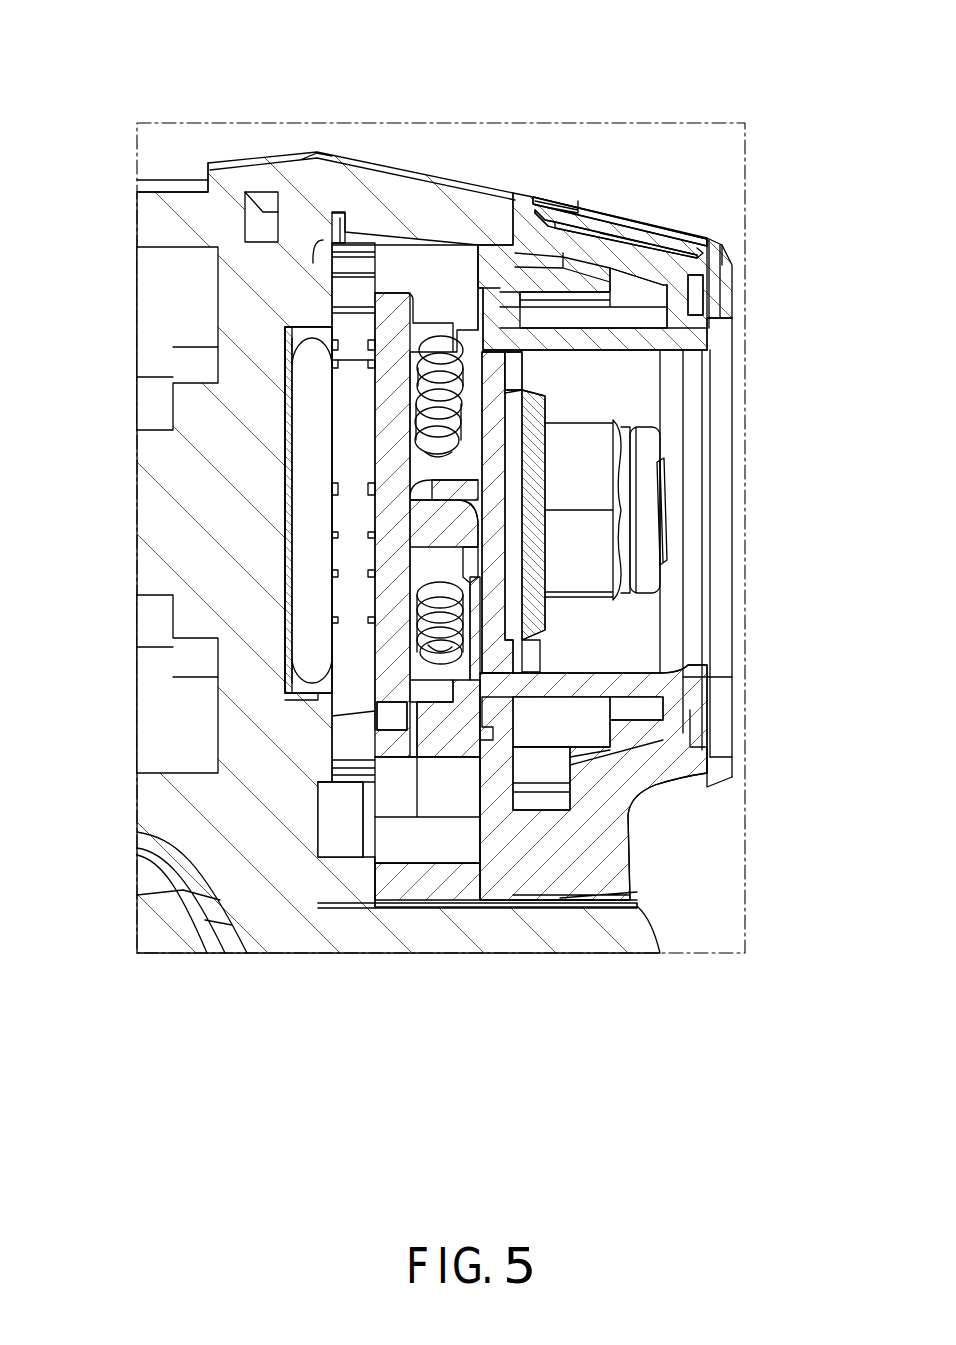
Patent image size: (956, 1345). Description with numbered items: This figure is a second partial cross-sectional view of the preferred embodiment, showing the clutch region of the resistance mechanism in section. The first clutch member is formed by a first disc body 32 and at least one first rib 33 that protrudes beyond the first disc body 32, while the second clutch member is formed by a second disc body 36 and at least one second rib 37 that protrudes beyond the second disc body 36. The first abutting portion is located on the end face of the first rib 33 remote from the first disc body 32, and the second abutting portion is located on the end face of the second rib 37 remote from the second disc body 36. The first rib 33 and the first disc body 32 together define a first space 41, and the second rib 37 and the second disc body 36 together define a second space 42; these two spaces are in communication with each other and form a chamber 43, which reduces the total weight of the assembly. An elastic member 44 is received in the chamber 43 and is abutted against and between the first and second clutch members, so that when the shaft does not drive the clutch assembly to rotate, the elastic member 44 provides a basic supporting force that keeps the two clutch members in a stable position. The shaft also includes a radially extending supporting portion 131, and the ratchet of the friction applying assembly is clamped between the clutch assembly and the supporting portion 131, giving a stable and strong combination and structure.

The supporting portion 131 is at (305, 392).
The first disc body 32 is at (393, 707).
The first rib 33 is at (433, 535).
The second disc body 36 is at (492, 597).
The second rib 37 is at (480, 537).
The first space 41 is at (412, 456).
The second space 42 is at (466, 451).
The chamber 43 is at (438, 231).
The elastic member 44 is at (463, 670).